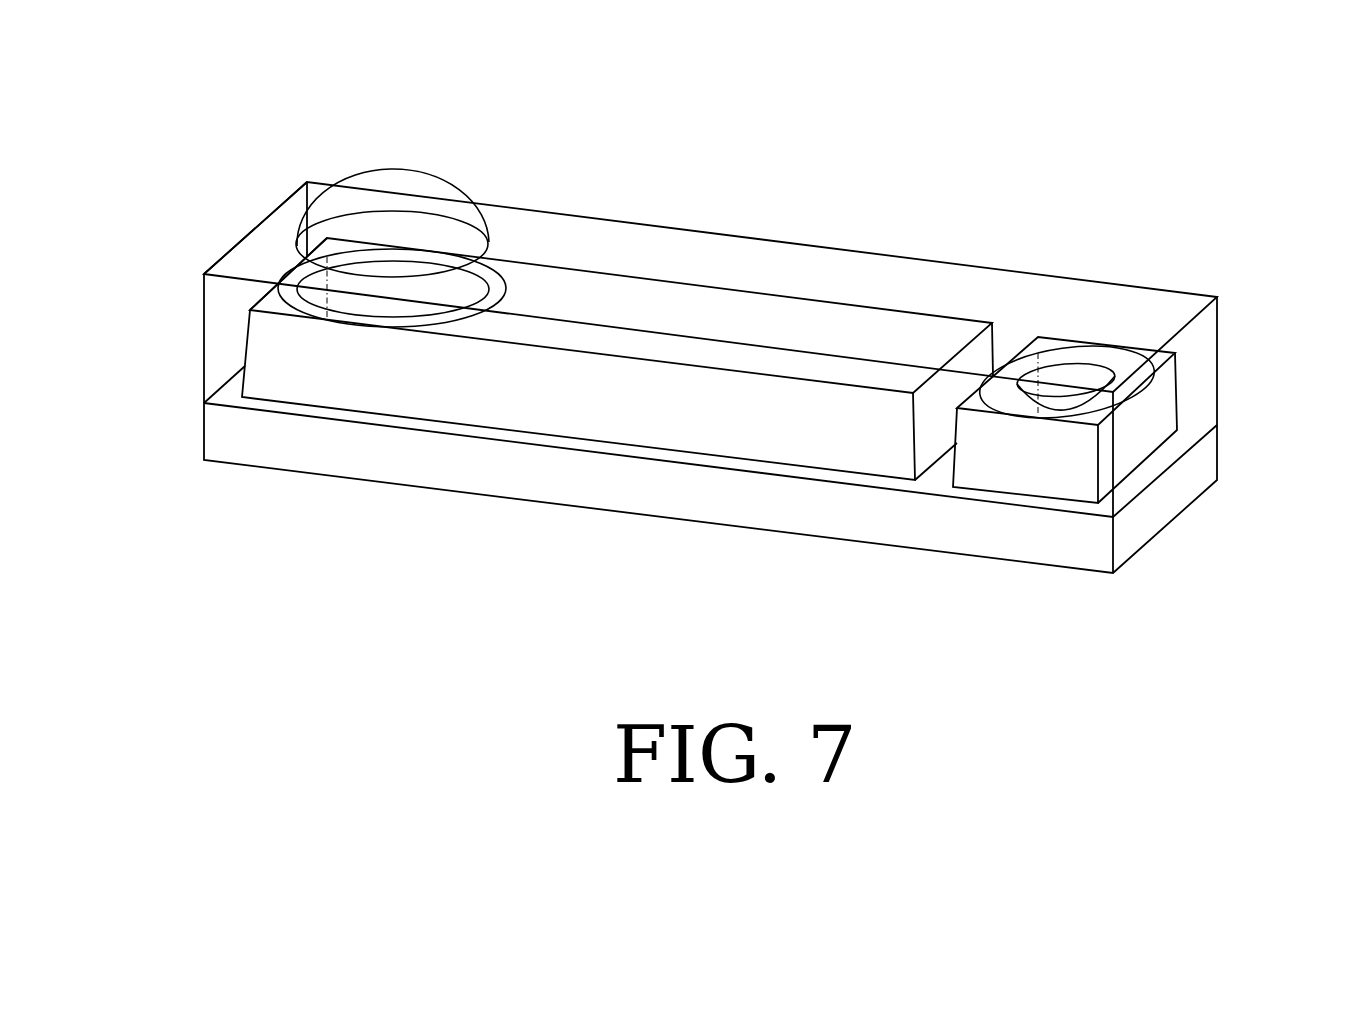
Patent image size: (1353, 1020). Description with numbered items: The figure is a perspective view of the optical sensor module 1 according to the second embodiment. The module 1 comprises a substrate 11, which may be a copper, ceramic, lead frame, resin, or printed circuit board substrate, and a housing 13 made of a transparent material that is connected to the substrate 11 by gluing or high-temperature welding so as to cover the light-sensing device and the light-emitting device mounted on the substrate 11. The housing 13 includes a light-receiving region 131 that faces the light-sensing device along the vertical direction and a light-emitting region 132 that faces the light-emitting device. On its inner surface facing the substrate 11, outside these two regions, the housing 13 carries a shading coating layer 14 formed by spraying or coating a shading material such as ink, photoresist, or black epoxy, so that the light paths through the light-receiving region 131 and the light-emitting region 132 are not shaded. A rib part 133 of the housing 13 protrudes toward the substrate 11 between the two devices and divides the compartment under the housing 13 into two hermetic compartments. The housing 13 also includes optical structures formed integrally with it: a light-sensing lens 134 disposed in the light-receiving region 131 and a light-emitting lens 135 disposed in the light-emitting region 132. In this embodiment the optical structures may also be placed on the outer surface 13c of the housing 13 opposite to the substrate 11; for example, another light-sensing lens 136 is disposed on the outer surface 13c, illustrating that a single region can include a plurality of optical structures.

The optical sensor module 1 is at (1258, 265).
The substrate 11 is at (445, 475).
The housing 13 is at (670, 245).
The outer surface 13c is at (275, 227).
The light-receiving region 131 is at (428, 267).
The light-emitting region 132 is at (1108, 360).
The rib part 133 is at (938, 483).
The light-sensing lens 134 is at (335, 302).
The light-emitting lens 135 is at (1083, 400).
The another light-sensing lens 136 is at (393, 170).
The shading coating layer 14 is at (842, 462).